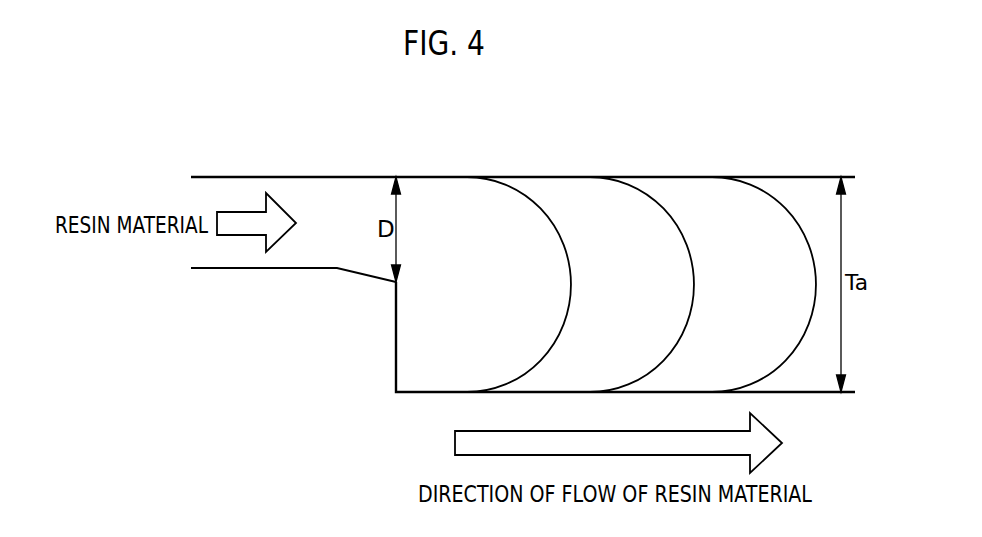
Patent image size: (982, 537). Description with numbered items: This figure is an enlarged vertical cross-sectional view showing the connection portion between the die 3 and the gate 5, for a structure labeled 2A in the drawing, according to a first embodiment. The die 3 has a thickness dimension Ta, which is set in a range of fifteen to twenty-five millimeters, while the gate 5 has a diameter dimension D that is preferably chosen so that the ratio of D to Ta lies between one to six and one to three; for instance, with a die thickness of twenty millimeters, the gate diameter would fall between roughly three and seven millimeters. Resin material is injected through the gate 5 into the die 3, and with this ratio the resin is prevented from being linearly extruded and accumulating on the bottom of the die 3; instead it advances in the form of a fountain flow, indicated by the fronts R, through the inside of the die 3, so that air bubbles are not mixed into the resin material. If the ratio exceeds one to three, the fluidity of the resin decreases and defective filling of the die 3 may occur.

The molded article / resin flow path 2A is at (503, 232).
The gate 5 is at (303, 177).
The die 3 is at (512, 177).
The resin flow front R is at (606, 215).